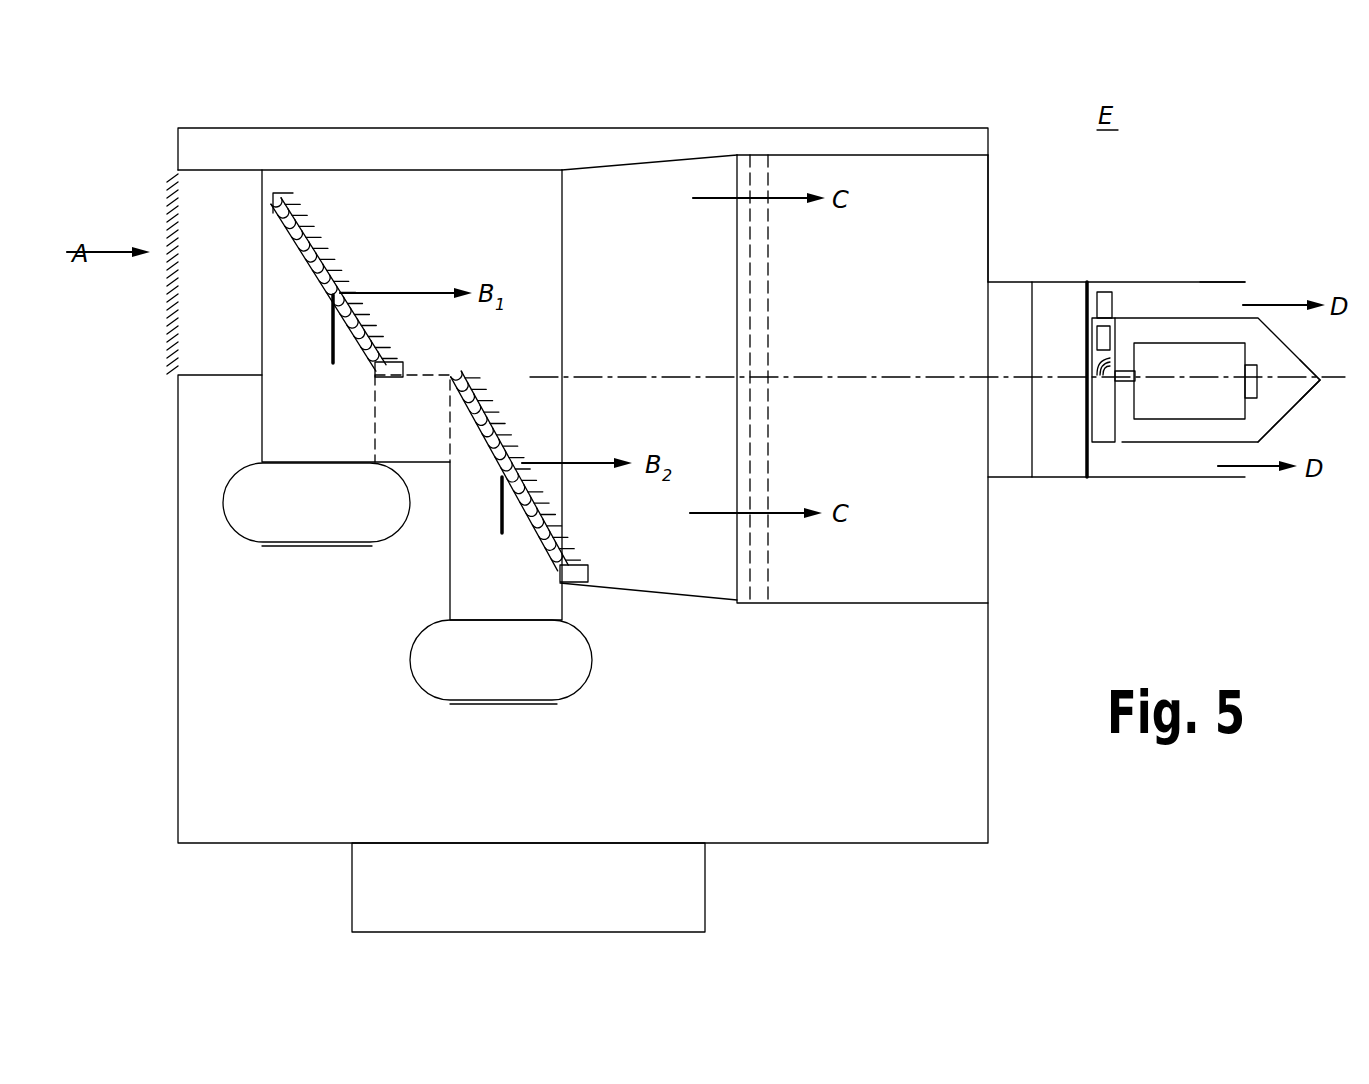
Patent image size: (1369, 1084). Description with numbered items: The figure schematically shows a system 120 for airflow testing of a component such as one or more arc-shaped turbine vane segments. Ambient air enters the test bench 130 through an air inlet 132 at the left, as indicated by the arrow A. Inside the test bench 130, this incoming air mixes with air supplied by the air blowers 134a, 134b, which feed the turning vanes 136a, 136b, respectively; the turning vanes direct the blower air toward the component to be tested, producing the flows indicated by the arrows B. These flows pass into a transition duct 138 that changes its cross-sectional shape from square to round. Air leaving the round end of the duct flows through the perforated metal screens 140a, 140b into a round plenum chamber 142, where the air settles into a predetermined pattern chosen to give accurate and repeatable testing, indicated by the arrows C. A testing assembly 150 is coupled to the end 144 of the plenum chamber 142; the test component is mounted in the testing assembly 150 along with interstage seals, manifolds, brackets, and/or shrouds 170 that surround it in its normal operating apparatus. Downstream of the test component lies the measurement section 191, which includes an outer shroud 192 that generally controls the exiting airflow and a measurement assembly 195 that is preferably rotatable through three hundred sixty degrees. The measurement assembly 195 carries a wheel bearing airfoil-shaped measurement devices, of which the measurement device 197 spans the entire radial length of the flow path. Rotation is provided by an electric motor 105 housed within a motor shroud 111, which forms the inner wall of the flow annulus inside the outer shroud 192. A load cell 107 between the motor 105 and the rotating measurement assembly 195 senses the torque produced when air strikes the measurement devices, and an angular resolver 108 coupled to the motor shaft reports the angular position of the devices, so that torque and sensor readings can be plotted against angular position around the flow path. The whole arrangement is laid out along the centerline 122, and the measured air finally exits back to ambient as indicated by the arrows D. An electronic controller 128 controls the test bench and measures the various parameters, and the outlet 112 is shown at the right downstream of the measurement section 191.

The system 120 is at (1045, 884).
The electronic controller 128 is at (708, 907).
The test bench 130 is at (460, 128).
The air inlet 132 is at (167, 367).
The air blower 134a is at (237, 545).
The air blower 134b is at (412, 682).
The turning vane 136a is at (312, 224).
The turning vane 136b is at (483, 403).
The transition duct 138 is at (645, 162).
The perforated metal screen 140a is at (747, 547).
The perforated metal screen 140b is at (767, 423).
The plenum chamber 142 is at (925, 198).
The end of chamber 144 is at (988, 225).
The testing assembly 150 is at (1005, 480).
The shroud 170 is at (1078, 480).
The outlet 112 is at (1197, 465).
The measurement section 191 is at (1185, 282).
The outer shroud 192 is at (1245, 282).
The measurement assembly 195 is at (1120, 298).
The measurement device 197 is at (1105, 290).
The electric motor 105 is at (1207, 343).
The load cell 107 is at (1126, 385).
The angular resolver 108 is at (1127, 368).
The centerline 122 is at (1333, 380).
The motor shroud 111 is at (1297, 413).